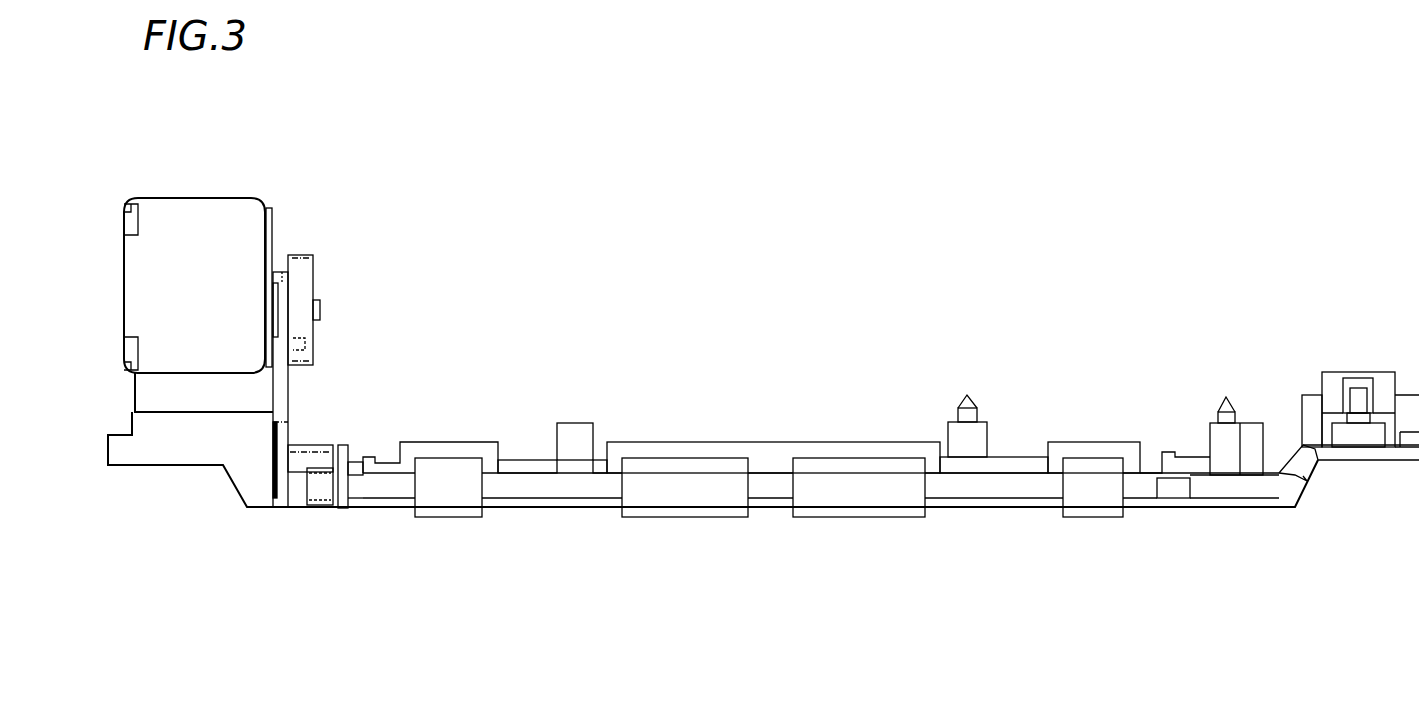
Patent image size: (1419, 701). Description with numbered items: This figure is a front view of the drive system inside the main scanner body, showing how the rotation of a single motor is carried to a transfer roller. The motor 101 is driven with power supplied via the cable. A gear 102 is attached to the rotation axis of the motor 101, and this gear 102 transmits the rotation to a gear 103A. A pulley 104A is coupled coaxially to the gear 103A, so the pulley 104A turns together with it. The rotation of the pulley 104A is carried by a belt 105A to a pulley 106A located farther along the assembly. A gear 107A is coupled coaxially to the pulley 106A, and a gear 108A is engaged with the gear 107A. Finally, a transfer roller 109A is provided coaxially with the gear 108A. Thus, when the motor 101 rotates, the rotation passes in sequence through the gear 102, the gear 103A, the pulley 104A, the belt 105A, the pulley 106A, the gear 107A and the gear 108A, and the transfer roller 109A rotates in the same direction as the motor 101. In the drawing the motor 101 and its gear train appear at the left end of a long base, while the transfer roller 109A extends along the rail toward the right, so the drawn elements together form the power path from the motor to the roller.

The motor 101 is at (199, 198).
The gear 102 is at (282, 270).
The gear 103A is at (313, 285).
The pulley 104A is at (293, 348).
The belt 105A is at (285, 383).
The pulley 106A is at (282, 492).
The gear 107A is at (313, 443).
The gear 108A is at (322, 498).
The transfer roller 109A is at (455, 500).